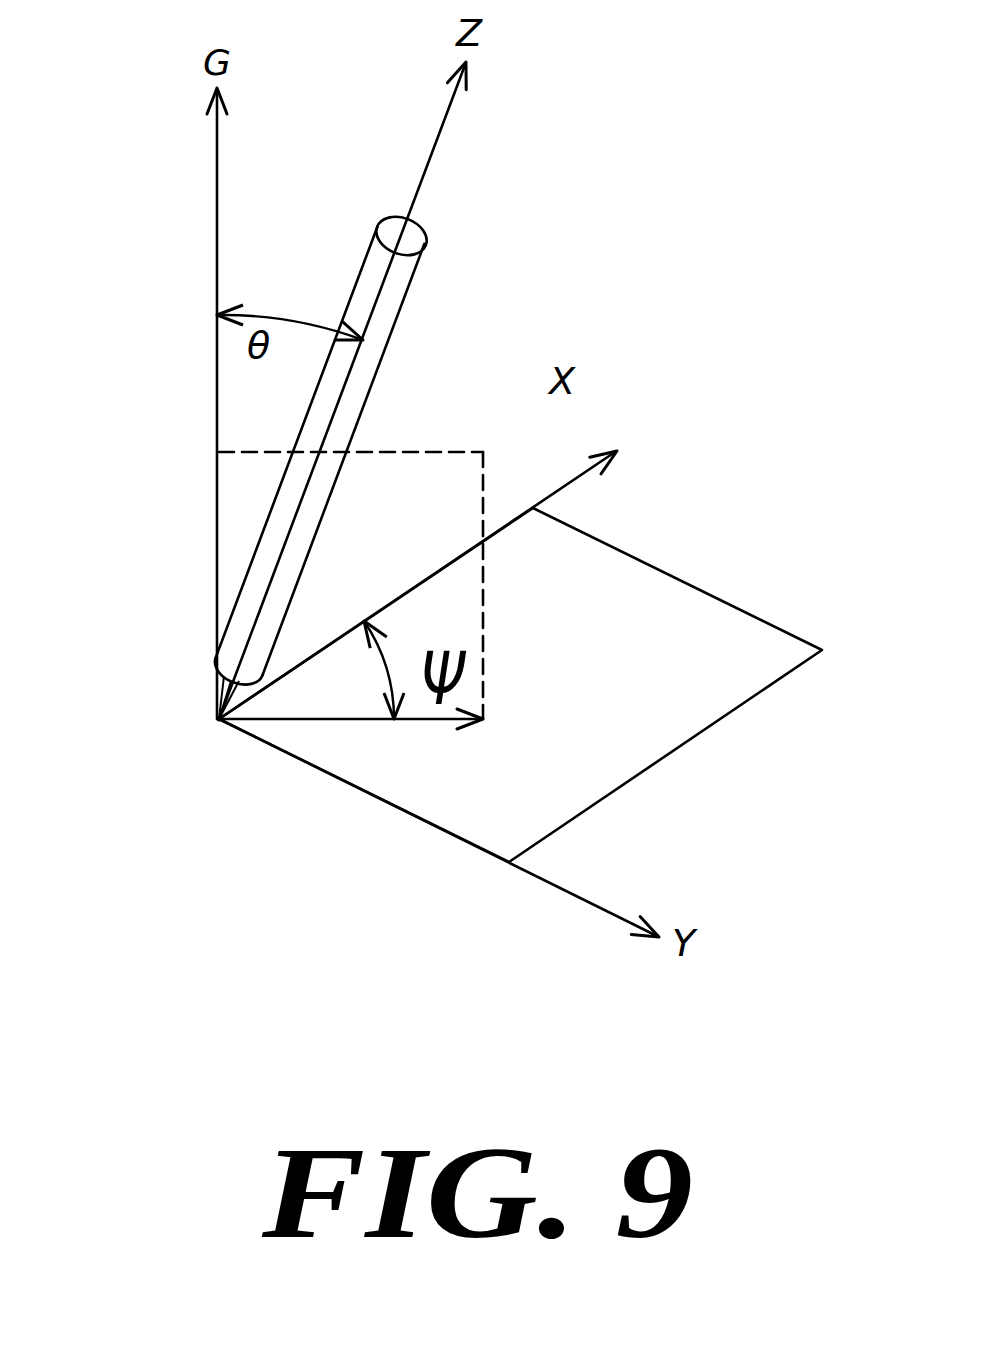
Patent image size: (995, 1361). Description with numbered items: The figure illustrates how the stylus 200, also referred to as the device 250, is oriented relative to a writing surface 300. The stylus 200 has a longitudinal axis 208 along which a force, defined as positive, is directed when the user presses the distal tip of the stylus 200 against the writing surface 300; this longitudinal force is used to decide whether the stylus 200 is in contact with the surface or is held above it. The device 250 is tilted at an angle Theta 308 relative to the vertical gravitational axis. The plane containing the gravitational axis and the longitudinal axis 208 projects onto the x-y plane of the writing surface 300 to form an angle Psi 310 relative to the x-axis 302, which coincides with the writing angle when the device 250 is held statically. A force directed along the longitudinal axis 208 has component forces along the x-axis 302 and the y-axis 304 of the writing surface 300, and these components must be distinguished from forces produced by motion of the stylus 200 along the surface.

The stylus 200 is at (216, 703).
The longitudinal axis 208 is at (440, 142).
The device 250 is at (405, 298).
The writing surface 300 is at (722, 628).
The x-axis 302 is at (577, 475).
The y-axis 304 is at (560, 888).
The angle Theta 308 is at (292, 318).
The angle Psi 310 is at (388, 655).